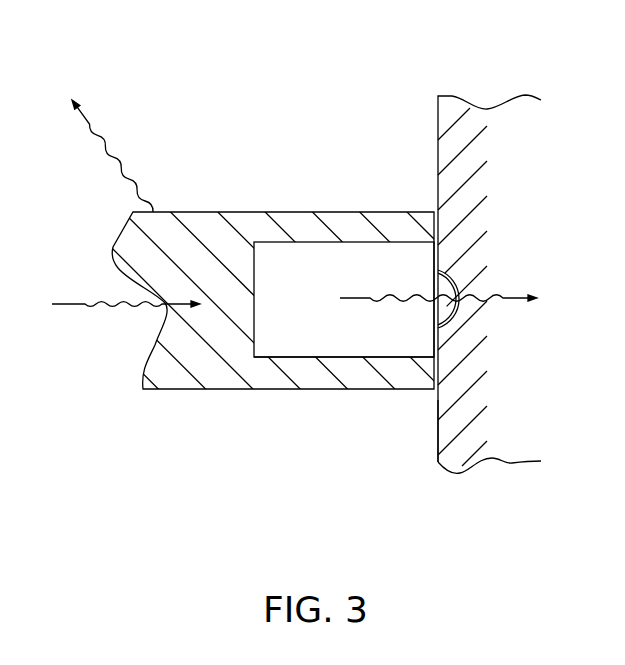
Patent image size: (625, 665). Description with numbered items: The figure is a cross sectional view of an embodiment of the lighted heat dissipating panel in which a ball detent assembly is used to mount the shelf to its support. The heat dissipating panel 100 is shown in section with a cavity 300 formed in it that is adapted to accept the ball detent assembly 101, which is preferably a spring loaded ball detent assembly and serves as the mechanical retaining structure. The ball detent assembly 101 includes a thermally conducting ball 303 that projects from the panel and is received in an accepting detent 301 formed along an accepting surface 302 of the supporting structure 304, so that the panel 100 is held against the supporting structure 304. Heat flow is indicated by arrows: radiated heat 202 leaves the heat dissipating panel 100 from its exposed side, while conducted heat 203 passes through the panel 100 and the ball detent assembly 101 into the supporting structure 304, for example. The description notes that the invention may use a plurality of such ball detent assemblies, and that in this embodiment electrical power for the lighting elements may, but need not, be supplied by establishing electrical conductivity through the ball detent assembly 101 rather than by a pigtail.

The heat dissipating panel 100 is at (197, 205).
The ball detent assembly 101 is at (284, 365).
The radiated heat 202 is at (98, 140).
The conducted heat 203 is at (294, 301).
The cavity 300 is at (358, 238).
The accepting detent 301 is at (466, 275).
The accepting surface 302 is at (446, 422).
The thermally conducting ball 303 is at (442, 312).
The supporting structure 304 is at (522, 91).